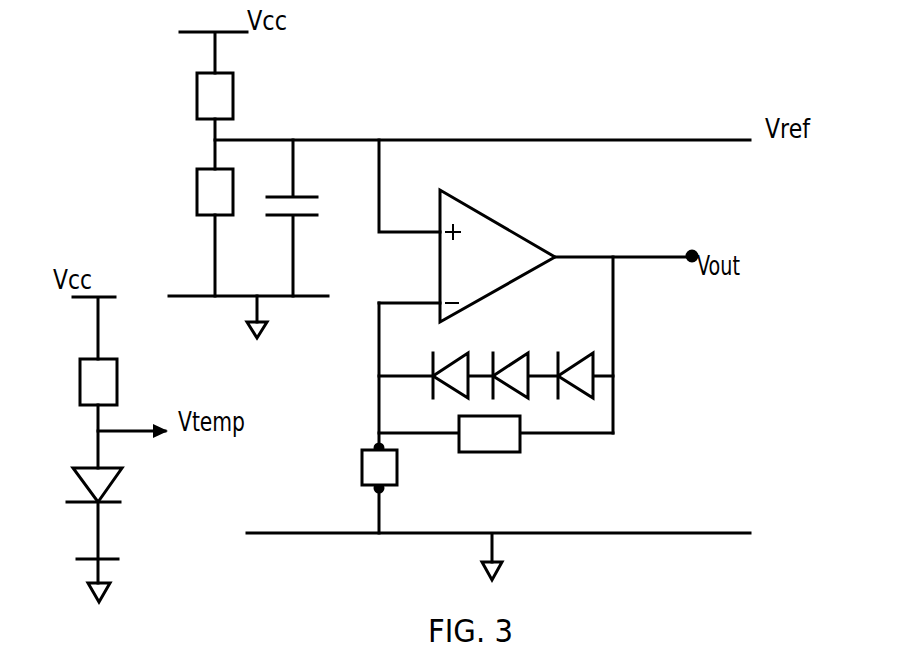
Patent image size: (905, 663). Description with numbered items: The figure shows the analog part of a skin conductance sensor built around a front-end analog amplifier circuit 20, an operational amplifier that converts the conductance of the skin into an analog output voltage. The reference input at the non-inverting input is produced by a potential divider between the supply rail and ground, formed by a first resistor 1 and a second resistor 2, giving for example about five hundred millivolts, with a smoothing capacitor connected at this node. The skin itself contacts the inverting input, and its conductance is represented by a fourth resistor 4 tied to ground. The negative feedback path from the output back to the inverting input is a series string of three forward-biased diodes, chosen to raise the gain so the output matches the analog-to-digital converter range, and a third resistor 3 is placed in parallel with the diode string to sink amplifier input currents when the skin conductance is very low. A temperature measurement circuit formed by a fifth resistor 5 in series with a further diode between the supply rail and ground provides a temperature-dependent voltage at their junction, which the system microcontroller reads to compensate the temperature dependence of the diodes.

The analog amplifier circuit 20 is at (525, 236).
The resistor R1 1 is at (194, 96).
The resistor R2 2 is at (194, 187).
The resistor R3 3 is at (499, 452).
The resistor R4 4 is at (357, 462).
The resistor R5 5 is at (78, 382).